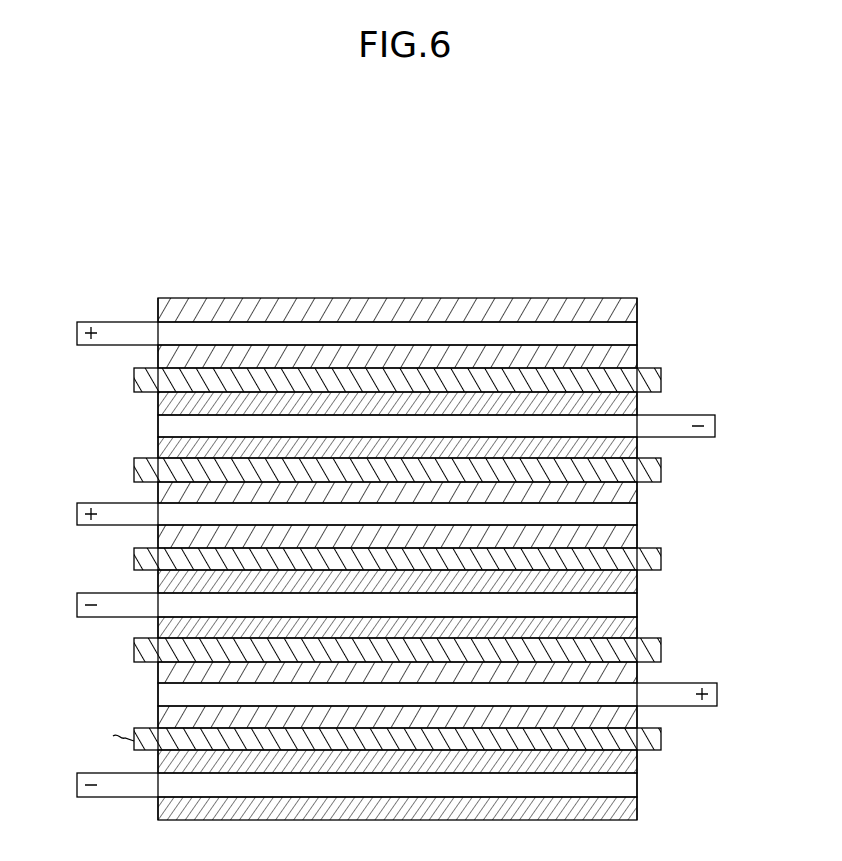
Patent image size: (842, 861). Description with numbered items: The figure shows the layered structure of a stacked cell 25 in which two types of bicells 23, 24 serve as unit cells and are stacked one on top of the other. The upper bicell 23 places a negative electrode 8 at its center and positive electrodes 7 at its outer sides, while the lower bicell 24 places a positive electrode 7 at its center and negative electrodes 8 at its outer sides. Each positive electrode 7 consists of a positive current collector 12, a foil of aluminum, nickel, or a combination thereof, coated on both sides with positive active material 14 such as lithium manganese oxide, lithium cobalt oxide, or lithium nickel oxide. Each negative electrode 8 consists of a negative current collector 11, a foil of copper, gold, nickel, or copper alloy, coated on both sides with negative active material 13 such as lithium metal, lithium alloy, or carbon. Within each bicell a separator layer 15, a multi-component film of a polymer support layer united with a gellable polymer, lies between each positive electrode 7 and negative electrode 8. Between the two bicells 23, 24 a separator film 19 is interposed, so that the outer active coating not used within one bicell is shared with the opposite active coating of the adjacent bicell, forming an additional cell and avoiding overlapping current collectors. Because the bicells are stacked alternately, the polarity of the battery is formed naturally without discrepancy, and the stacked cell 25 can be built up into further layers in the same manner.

The positive electrode 7 is at (714, 292).
The negative electrode 8 is at (782, 382).
In FIG. 6, the negative current collector 11 is at (715, 428).
In FIG. 6, the positive current collector 12 is at (630, 329).
In FIG. 6, the negative active material 13 is at (632, 398).
In FIG. 6, the positive active material 14 is at (632, 306).
In FIG. 6, the separator layer 15 is at (134, 381).
The separator film 19 is at (134, 561).
The bicell 23 is at (63, 298).
The bicell 24 is at (64, 573).
In FIG. 6, the stacked cell 25 is at (762, 551).